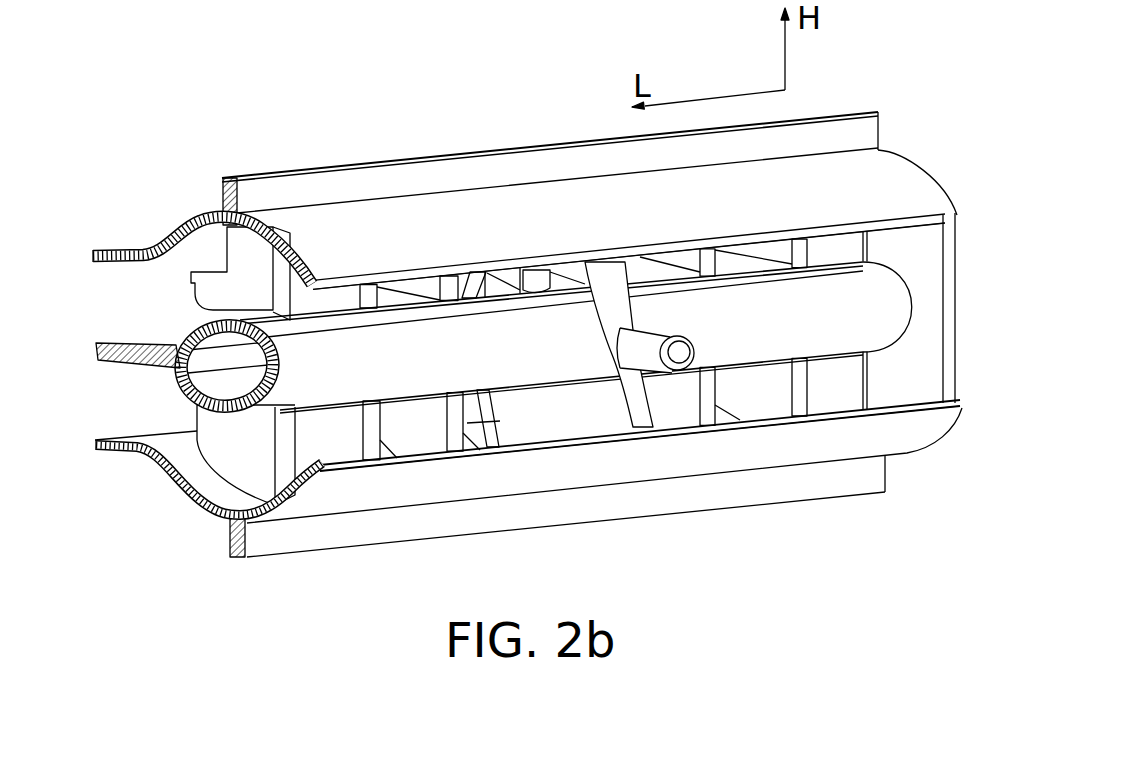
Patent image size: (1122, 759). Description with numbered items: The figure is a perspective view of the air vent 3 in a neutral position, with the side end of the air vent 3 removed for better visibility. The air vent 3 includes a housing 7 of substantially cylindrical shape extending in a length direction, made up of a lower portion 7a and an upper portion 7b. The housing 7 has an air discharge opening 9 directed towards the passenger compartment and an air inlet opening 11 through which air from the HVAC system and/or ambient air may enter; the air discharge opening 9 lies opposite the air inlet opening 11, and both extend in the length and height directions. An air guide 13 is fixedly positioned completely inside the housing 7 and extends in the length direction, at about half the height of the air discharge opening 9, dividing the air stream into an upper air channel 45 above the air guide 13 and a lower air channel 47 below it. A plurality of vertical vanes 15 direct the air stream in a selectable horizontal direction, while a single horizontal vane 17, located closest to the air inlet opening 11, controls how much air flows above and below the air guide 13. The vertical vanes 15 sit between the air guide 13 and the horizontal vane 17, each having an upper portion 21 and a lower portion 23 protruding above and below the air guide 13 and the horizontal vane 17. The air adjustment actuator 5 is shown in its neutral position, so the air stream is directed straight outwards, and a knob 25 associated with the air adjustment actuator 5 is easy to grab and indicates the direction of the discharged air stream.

The air vent 3 is at (362, 76).
The air adjustment actuator 5 is at (632, 390).
The housing 7 is at (293, 140).
The lower portion 7a is at (169, 455).
The upper portion 7b is at (183, 224).
The air discharge opening 9 is at (870, 385).
The air inlet opening 11 is at (130, 301).
The air guide 13 is at (743, 327).
The vertical vanes 15 is at (423, 422).
The horizontal vane 17 is at (121, 378).
The upper portion 21 is at (247, 257).
The lower portion 23 is at (240, 460).
The knob 25 is at (679, 352).
The upper air channel 45 is at (337, 312).
The lower air channel 47 is at (243, 445).